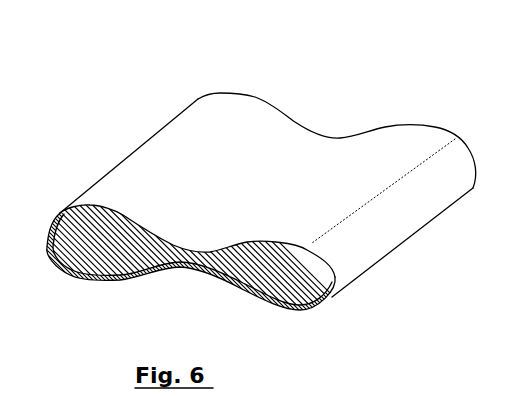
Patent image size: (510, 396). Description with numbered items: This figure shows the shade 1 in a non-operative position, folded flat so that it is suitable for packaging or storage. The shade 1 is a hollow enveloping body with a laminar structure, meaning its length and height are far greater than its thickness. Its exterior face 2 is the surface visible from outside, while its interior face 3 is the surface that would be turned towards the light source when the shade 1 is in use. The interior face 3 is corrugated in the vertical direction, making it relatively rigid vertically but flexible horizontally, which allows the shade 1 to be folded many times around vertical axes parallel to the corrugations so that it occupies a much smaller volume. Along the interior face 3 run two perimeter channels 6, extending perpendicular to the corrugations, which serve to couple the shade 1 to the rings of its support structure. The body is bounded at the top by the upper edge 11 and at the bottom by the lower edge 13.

The shade 1 is at (87, 57).
The exterior face 2 is at (187, 135).
The interior face 3 is at (87, 238).
The perimeter channels 6 is at (248, 289).
The upper edge 11 is at (244, 96).
The lower edge 13 is at (58, 270).